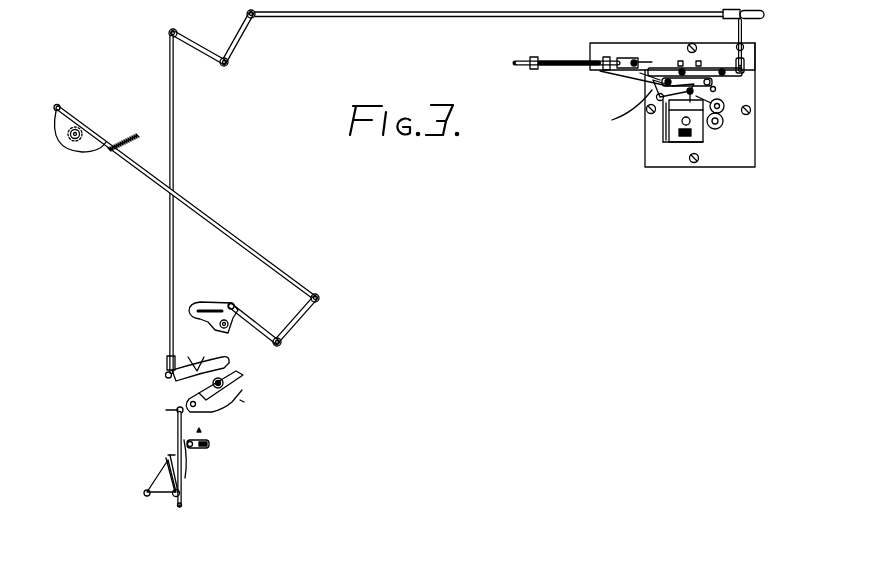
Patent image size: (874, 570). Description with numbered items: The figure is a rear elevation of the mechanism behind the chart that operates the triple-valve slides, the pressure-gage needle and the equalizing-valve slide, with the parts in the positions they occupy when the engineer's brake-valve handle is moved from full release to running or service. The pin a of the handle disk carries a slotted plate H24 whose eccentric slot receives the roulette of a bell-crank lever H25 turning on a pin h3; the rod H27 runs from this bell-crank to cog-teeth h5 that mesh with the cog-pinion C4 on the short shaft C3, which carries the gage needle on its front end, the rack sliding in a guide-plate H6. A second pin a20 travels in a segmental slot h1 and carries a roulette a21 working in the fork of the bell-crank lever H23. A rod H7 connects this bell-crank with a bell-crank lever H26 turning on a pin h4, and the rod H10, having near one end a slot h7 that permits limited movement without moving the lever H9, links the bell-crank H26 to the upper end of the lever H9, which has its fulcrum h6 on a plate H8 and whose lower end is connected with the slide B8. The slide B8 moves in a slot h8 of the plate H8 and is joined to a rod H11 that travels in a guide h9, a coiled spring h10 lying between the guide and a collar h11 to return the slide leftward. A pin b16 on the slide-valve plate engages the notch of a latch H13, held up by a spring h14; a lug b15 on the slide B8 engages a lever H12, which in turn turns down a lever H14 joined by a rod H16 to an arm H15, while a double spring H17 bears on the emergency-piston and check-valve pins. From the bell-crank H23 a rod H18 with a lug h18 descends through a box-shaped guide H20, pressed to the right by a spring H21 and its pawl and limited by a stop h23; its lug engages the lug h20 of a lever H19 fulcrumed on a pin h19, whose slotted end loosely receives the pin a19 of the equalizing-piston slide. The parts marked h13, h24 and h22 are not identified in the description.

The rod H10 is at (489, 22).
The slot h7 is at (762, 17).
The lever H9 is at (757, 41).
The fulcrum h6 is at (755, 55).
The slide B8 is at (665, 63).
The pin b16 is at (688, 62).
The plate H8 is at (647, 128).
The coiled spring h10 is at (548, 72).
The collar h11 is at (530, 58).
The slot h8 is at (628, 56).
The rod H11 is at (613, 58).
The guide h9 is at (608, 73).
The lug b15 is at (647, 82).
The latch H13 is at (712, 82).
The pawl h13 is at (679, 94).
The lever H12 is at (617, 115).
The arm H15 is at (677, 143).
The rod H16 is at (668, 132).
The lever H14 is at (723, 138).
The spring h14 is at (740, 97).
The double spring H17 is at (715, 137).
The bell-crank lever H26 is at (238, 52).
The pin h4 is at (229, 68).
The rod H7 is at (169, 252).
The rod H27 is at (186, 203).
The guide-plate H6 is at (63, 109).
The cog-teeth h5 is at (122, 162).
The short shaft C3 is at (67, 150).
The cog-pinion C4 is at (65, 139).
The bell-crank lever H25 is at (297, 319).
The pin h3 is at (283, 347).
The slotted plate H24 is at (217, 303).
The segmental slot h1 is at (234, 344).
The pin a is at (227, 364).
The pin a20 is at (240, 376).
The roulette a21 is at (242, 384).
The bell-crank lever H23 is at (178, 408).
The pin h24 is at (166, 410).
The rod H18 is at (178, 452).
The lug h18 is at (205, 428).
The lever H19 is at (207, 447).
The pin h19 is at (202, 459).
The lug h20 is at (168, 455).
The spring H21 is at (166, 463).
The box-shaped guide H20 is at (172, 497).
The pin h22 is at (213, 453).
The pin a19 is at (253, 467).
The stop h23 is at (190, 508).